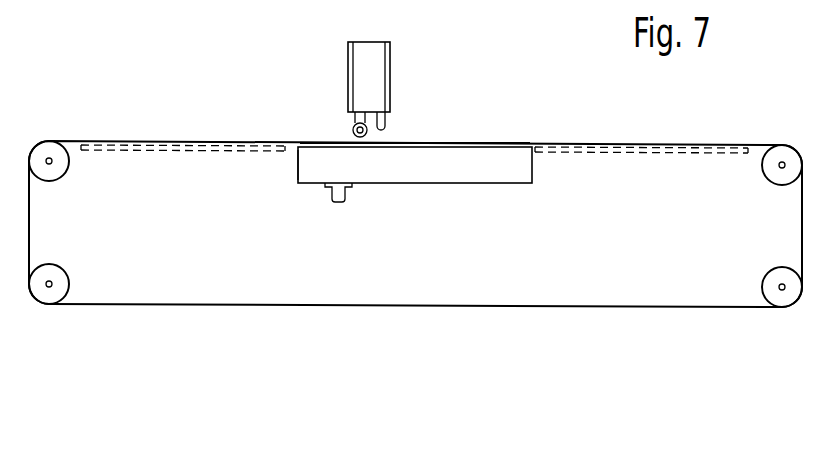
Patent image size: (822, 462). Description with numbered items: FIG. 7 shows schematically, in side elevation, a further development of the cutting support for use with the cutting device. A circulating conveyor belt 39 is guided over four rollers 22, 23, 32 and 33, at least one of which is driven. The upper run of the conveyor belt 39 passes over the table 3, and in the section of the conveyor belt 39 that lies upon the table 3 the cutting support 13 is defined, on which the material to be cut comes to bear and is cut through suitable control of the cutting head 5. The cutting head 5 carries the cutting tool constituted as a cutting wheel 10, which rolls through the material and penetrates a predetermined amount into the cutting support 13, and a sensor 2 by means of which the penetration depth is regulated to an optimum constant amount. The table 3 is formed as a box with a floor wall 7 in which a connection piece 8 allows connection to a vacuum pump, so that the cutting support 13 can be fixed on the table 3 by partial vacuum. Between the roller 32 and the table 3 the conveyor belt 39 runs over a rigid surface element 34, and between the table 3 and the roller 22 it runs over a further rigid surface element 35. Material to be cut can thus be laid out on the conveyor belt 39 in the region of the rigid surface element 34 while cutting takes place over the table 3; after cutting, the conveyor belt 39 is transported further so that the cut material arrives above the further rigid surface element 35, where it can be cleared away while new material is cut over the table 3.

The sensor 2 is at (386, 126).
The table 3 is at (300, 169).
The cutting head 5 is at (386, 75).
The floor wall 7 is at (453, 185).
The connection piece 8 is at (333, 191).
The cutting wheel 10 is at (353, 128).
The cutting support 13 is at (475, 145).
The roller 22 is at (770, 174).
The roller 23 is at (764, 283).
The roller 32 is at (58, 170).
The roller 33 is at (60, 276).
The rigid surface element 34 is at (181, 151).
The further rigid surface element 35 is at (597, 155).
The conveyor belt 39 is at (553, 307).